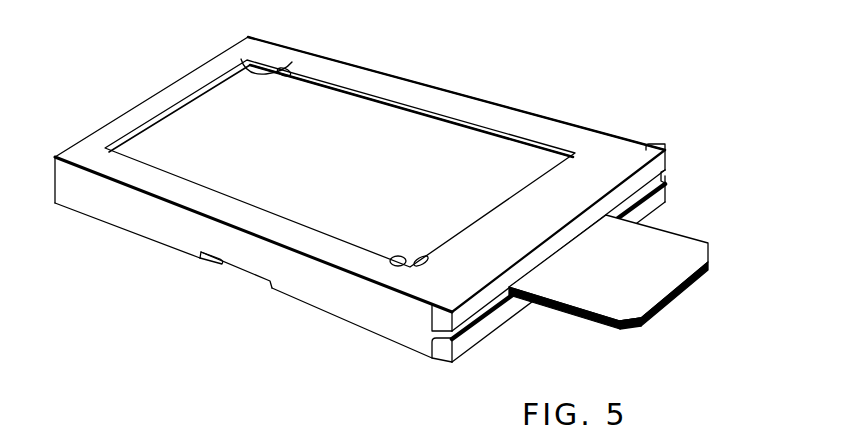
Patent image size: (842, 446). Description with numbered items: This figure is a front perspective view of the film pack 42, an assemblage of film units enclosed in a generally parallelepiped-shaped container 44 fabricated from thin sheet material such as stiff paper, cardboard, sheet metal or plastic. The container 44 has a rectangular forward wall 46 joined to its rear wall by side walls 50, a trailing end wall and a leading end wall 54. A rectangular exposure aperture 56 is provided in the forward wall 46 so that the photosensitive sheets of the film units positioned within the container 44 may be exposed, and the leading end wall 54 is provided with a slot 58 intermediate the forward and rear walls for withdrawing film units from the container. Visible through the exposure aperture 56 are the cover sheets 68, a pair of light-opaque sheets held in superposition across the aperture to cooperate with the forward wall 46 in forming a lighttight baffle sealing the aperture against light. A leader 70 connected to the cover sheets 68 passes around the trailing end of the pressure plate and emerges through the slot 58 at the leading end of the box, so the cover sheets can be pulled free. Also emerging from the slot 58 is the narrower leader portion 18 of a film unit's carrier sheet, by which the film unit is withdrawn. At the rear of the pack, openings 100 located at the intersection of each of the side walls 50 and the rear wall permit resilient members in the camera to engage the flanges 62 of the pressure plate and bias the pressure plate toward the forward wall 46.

The film pack 42 is at (491, 84).
The container 44 is at (294, 302).
The forward wall 46 is at (537, 225).
The side walls 50 is at (146, 221).
The leading end wall 54 is at (463, 354).
The exposure aperture 56 is at (278, 72).
The slot 58 is at (494, 308).
The flanges 62 is at (244, 276).
The cover sheets 68 is at (304, 155).
The leader 70 is at (629, 331).
The openings 100 is at (216, 263).
The leader portion 18 is at (606, 283).